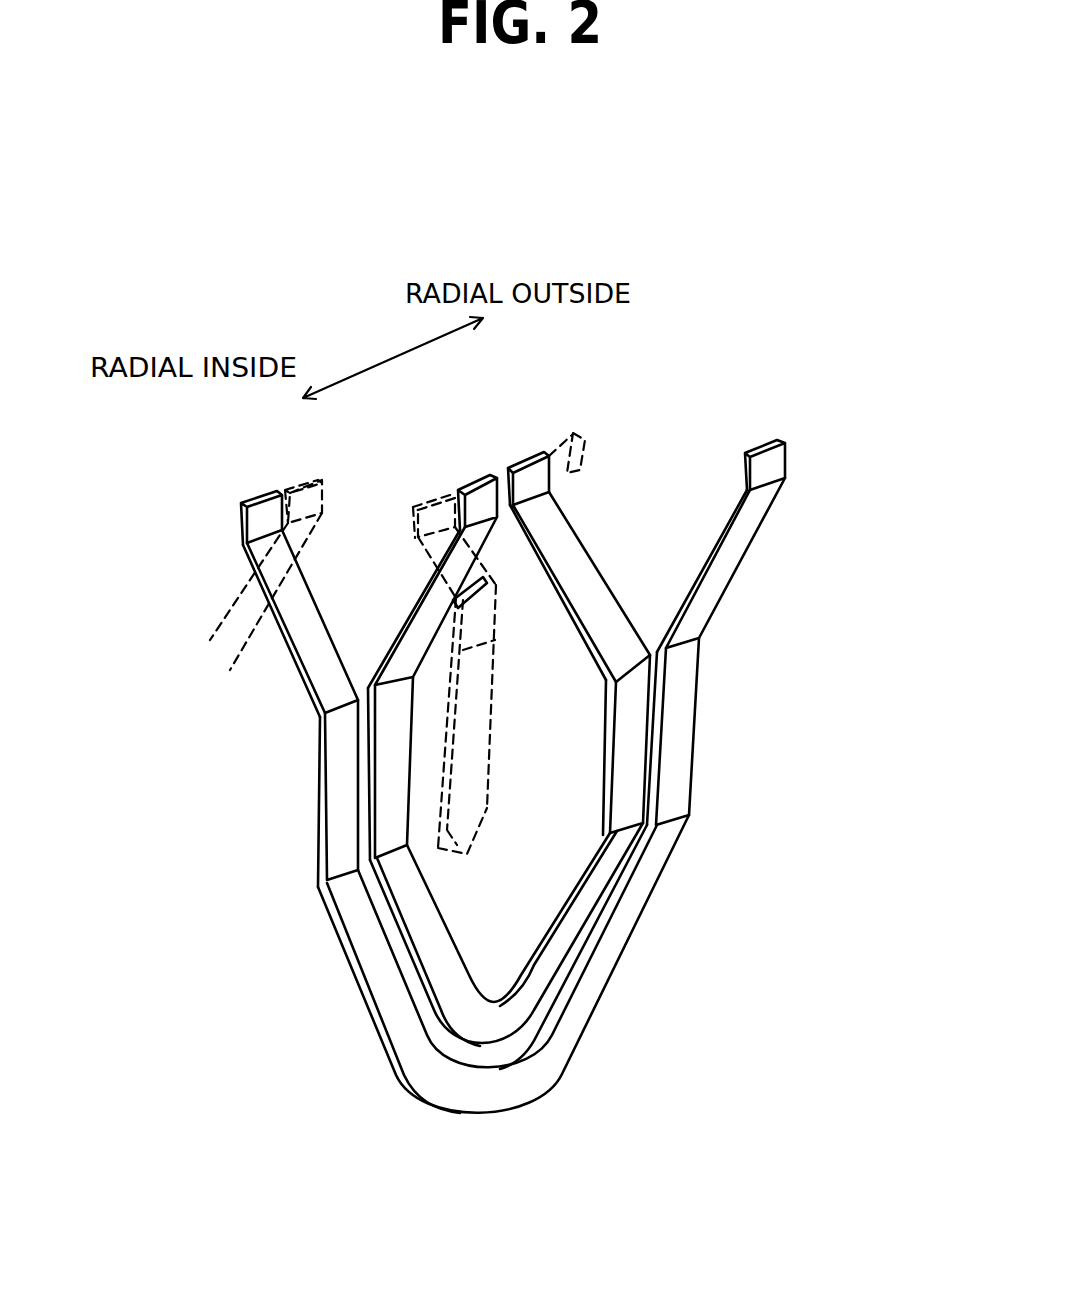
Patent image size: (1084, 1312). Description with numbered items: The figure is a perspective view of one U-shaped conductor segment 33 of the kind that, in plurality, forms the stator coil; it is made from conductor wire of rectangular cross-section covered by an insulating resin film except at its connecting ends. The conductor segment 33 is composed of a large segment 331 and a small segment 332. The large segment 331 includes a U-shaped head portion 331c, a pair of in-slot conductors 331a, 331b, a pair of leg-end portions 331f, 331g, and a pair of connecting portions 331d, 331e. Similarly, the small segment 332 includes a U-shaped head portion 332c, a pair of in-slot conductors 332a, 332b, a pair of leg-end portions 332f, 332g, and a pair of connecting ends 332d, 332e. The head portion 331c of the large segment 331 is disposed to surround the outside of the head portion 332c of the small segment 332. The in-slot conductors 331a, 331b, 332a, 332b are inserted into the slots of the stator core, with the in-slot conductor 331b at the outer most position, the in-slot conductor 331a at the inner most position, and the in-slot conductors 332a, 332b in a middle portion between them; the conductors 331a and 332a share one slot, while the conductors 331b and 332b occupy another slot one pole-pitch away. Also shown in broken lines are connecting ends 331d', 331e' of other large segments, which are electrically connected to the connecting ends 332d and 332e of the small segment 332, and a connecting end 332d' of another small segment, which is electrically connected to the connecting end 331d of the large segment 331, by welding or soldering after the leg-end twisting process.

The U-shaped conductor segment 33 is at (516, 781).
The large segment 331 is at (516, 823).
The small segment 332 is at (535, 764).
The in-slot conductor 331a is at (340, 755).
The in-slot conductor 331b is at (680, 715).
The U-shaped head portion 331c is at (487, 1093).
The connecting portion 331d is at (197, 534).
The connecting portion 331e is at (832, 479).
The leg-end portion 331f is at (322, 660).
The leg-end portion 331g is at (750, 518).
The connecting end of other large segment 331d' is at (454, 644).
The connecting end of other large segment 331e' is at (597, 434).
The in-slot conductor 332a is at (387, 803).
The in-slot conductor 332b is at (633, 778).
The U-shaped head portion 332c is at (505, 1024).
The connecting end 332d is at (475, 452).
The connecting end 332e is at (520, 466).
The leg-end portion 332f is at (427, 620).
The leg-end portion 332g is at (585, 585).
The connecting end of another small segment 332d' is at (299, 544).